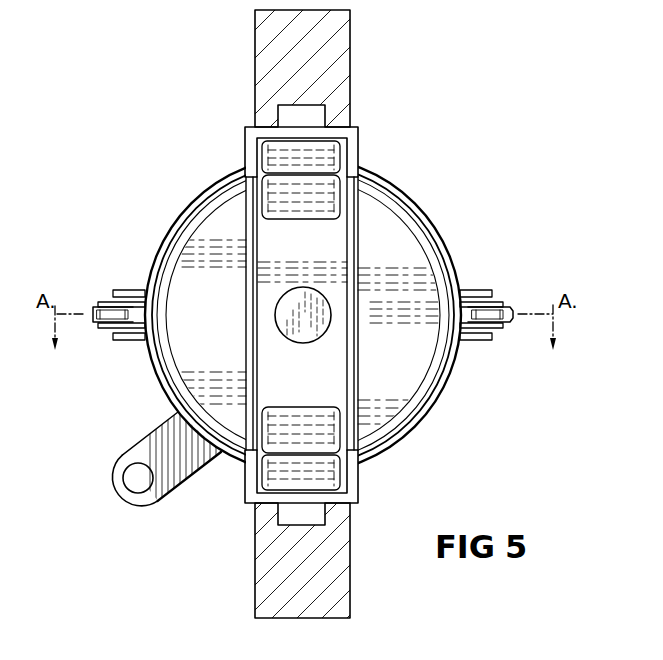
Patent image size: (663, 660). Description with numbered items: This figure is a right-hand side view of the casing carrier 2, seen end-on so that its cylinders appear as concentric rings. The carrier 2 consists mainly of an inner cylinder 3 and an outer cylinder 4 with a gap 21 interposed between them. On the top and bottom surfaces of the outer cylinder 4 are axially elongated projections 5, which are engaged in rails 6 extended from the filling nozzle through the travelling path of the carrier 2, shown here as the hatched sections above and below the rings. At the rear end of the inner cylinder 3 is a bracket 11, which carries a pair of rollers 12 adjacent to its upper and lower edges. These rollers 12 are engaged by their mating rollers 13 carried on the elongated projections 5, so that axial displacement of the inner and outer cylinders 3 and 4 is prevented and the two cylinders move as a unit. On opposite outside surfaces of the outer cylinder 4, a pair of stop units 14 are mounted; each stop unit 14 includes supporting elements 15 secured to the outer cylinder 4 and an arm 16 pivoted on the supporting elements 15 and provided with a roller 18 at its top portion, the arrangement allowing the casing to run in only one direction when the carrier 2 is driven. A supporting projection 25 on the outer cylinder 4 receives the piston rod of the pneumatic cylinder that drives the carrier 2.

The carrier 2 is at (172, 221).
The inner cylinder 3 is at (433, 263).
The outer cylinder 4 is at (424, 212).
The axially elongated projections 5 is at (357, 136).
The rails 6 is at (342, 47).
The bracket 11 is at (357, 255).
The rollers 12 is at (330, 206).
The mating rollers 13 is at (268, 150).
The stop unit 14 is at (310, 310).
The supporting elements 15 is at (483, 290).
The arm 16 is at (505, 303).
The roller 18 is at (511, 322).
The gap 21 is at (390, 200).
The supporting projection 25 is at (141, 447).